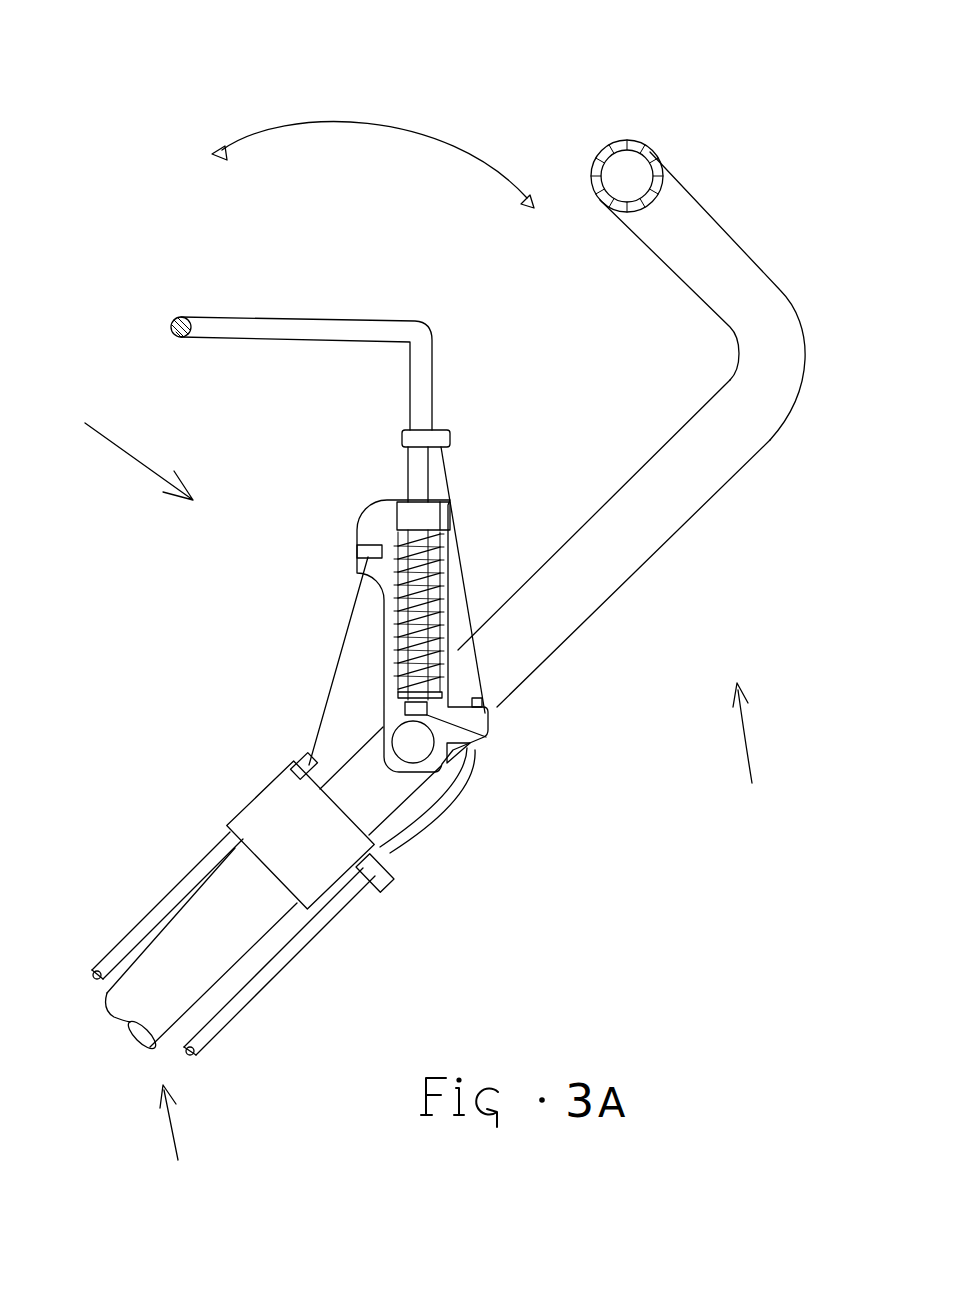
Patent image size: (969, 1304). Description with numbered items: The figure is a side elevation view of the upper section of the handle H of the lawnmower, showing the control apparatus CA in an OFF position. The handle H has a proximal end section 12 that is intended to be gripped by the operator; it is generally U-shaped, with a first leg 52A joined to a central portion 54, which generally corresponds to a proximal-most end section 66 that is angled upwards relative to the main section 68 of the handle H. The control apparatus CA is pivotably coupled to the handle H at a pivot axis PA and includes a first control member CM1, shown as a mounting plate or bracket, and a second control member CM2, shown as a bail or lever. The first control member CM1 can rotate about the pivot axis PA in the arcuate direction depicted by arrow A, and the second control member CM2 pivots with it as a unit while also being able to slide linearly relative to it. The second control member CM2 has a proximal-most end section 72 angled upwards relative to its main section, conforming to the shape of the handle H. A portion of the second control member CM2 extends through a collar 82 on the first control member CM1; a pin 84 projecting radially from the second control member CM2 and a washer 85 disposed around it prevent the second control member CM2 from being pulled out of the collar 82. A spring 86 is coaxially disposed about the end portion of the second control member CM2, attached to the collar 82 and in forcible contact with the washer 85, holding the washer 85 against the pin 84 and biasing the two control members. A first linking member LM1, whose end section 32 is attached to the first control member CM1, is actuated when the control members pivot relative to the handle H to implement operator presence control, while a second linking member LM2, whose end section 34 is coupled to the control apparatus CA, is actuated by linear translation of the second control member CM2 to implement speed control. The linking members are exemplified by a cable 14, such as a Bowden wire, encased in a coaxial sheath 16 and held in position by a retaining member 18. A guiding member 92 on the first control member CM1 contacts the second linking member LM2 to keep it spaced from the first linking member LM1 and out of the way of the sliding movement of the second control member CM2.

The arrow A is at (331, 120).
The central portion 54 is at (632, 142).
The proximal-most end section 66 is at (727, 230).
The main section 68 is at (727, 482).
The first leg 52A is at (645, 376).
The proximal-most end section 72 is at (305, 351).
The second control member CM2 is at (290, 317).
The end section 34 is at (450, 468).
The control apparatus CA is at (123, 444).
The end section 32 is at (404, 673).
The first control member CM1 is at (350, 505).
The collar 82 is at (441, 520).
The spring 86 is at (400, 617).
The washer 85 is at (403, 693).
The guiding member 92 is at (490, 723).
The pin 84 is at (487, 742).
The pivot axis PA is at (447, 768).
The cable 14 is at (325, 712).
The sheath 16 is at (298, 762).
The retaining member 18 is at (247, 806).
The first linking member LM1 is at (147, 913).
The second linking member LM2 is at (250, 1003).
The handle H is at (273, 962).
The proximal end section 12 is at (750, 752).